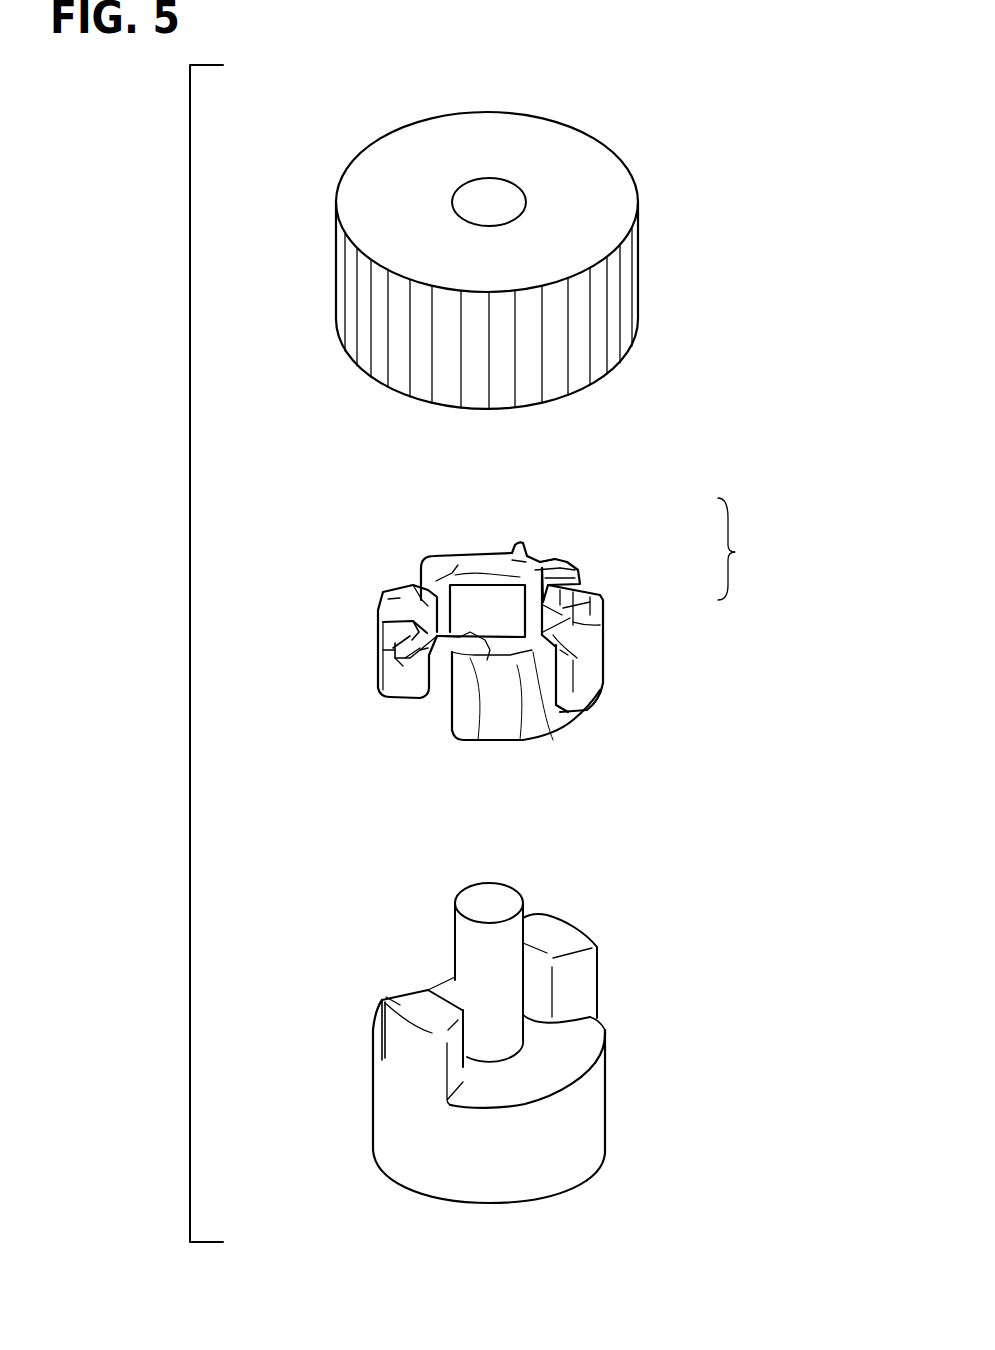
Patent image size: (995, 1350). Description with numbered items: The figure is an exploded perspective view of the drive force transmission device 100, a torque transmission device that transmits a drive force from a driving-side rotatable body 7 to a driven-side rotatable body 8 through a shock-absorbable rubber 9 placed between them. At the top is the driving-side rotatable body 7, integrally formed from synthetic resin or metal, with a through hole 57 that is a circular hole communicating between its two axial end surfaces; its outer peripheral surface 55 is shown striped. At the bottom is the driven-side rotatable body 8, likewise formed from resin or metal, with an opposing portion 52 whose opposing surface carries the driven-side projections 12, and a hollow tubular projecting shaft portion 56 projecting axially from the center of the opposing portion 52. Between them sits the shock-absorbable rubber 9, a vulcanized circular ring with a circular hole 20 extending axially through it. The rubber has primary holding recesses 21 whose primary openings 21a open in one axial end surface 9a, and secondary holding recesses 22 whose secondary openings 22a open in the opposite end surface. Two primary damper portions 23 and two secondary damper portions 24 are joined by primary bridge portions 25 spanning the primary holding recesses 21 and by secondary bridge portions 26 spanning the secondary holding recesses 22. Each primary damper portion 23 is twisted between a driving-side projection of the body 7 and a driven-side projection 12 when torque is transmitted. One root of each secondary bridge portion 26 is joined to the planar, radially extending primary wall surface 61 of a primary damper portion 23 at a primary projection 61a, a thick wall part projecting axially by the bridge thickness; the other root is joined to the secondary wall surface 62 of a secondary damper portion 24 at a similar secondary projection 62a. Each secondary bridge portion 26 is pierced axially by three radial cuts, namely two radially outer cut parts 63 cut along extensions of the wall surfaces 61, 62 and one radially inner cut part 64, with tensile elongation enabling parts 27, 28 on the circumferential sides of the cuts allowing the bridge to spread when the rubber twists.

The drive force transmission device 100 is at (190, 590).
The driving-side rotatable body 7 is at (537, 220).
The outer peripheral surface of magnet 55 is at (640, 244).
The through hole 57 is at (498, 191).
The shock-absorbable rubber 9 is at (510, 649).
The one axial end surface 9a is at (533, 683).
The circular hole 20 is at (493, 685).
The primary holding recess 21 is at (420, 583).
The primary opening 21a is at (572, 665).
The secondary holding recess 22 is at (420, 680).
The secondary opening 22a is at (390, 683).
The primary damper portion 23 is at (388, 604).
The secondary damper portion 24 is at (467, 563).
The primary bridge portion 25 is at (550, 707).
The secondary bridge portion 26 is at (285, 688).
The tensile elongation enabling part 27 is at (543, 550).
The tensile elongation enabling part 28 is at (566, 554).
The primary wall surface 61 is at (380, 680).
The primary projection 61a is at (577, 621).
The secondary wall surface 62 is at (577, 660).
The secondary projection 62a is at (520, 555).
The radially outer cut part 63 is at (382, 640).
The radially inner cut part 64 is at (402, 680).
The driven-side rotatable body 8 is at (489, 1047).
The driven-side projection 12 is at (560, 937).
The opposing portion 52 is at (560, 1073).
The projecting shaft portion 56 is at (455, 925).